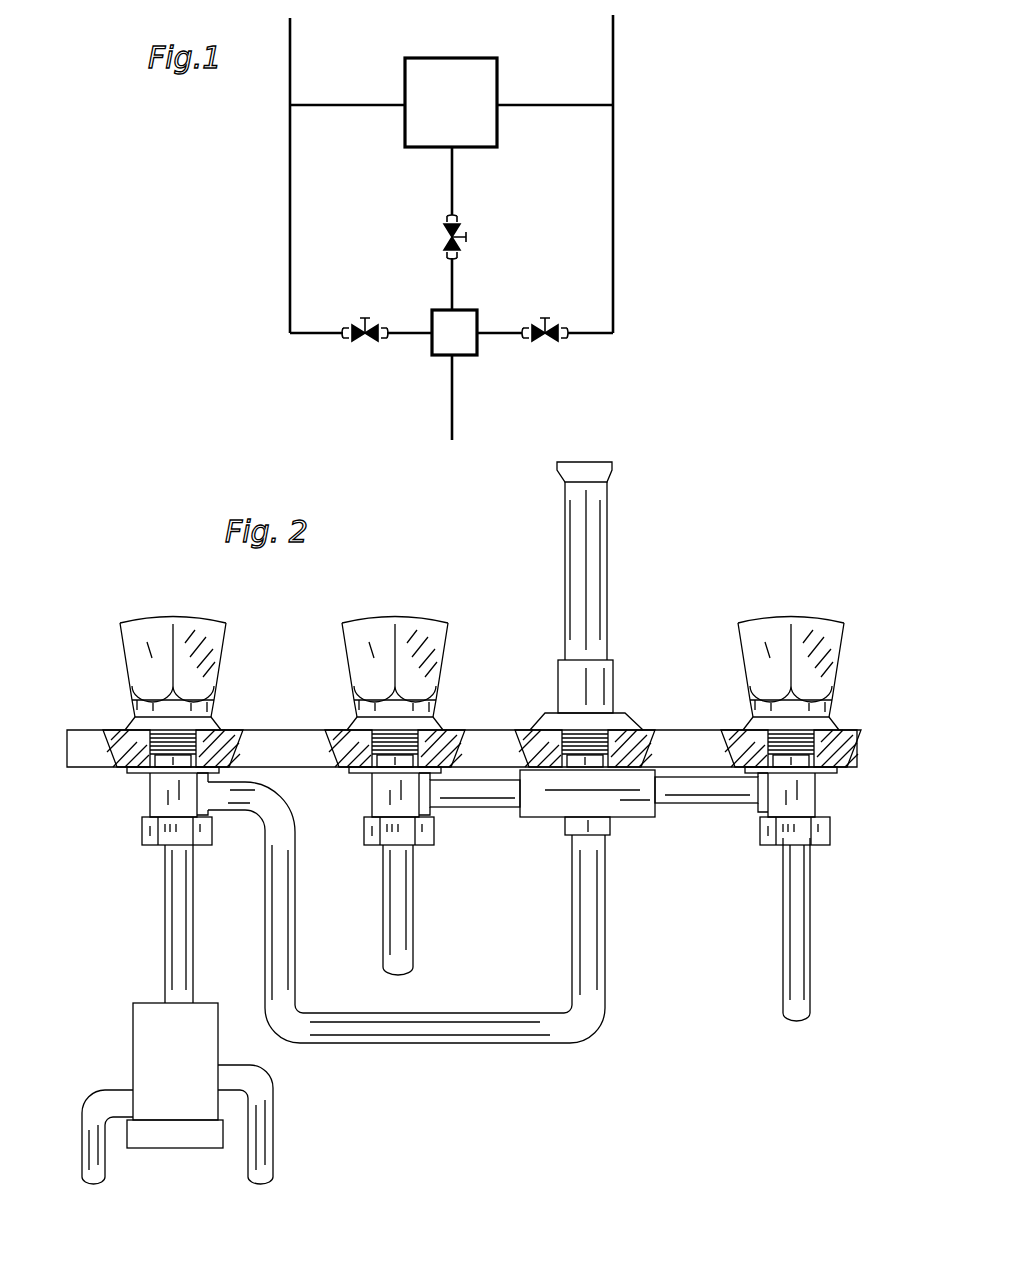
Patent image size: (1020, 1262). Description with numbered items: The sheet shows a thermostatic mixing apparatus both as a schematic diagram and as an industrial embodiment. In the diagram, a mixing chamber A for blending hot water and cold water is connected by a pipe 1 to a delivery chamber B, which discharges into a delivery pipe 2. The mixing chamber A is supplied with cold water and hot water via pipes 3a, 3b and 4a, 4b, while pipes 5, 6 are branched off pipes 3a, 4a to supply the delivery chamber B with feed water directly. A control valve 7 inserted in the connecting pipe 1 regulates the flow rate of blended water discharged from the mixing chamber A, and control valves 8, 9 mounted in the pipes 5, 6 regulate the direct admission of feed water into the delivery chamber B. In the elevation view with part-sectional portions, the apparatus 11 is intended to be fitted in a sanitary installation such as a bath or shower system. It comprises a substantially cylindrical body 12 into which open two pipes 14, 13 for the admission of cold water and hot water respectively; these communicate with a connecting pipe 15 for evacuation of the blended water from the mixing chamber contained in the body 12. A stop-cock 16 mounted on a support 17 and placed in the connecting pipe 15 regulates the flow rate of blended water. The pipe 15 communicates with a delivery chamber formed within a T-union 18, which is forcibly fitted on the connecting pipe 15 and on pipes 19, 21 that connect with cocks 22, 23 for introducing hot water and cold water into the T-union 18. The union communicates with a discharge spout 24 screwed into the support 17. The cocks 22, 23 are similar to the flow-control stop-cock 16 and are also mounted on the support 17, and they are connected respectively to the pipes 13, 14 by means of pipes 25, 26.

In FIG. 1, the pipe 1 is at (458, 181).
In FIG. 1, the delivery pipe 2 is at (458, 387).
In FIG. 1, the pipe 3a is at (290, 67).
In FIG. 1, the pipe 3b is at (330, 104).
In FIG. 1, the pipe 4a is at (615, 54).
In FIG. 1, the pipe 4b is at (553, 100).
In FIG. 1, the pipe 5 is at (290, 238).
In FIG. 1, the pipe 6 is at (615, 211).
In FIG. 1, the control valve 7 is at (466, 227).
In FIG. 1, the control valve 8 is at (375, 318).
In FIG. 1, the control valve 9 is at (552, 341).
In FIG. 1, the mixing chamber A is at (452, 72).
In FIG. 1, the delivery chamber B is at (465, 318).
In FIG. 2, the apparatus 11 is at (512, 1060).
In FIG. 2, the body 12 is at (131, 1040).
In FIG. 2, the pipe 13 is at (107, 1108).
In FIG. 2, the pipe 14 is at (268, 1136).
In FIG. 2, the connecting-pipe 15 is at (180, 956).
In FIG. 2, the stop-cock 16 is at (203, 633).
In FIG. 2, the support 17 is at (285, 738).
In FIG. 2, the T-union 18 is at (631, 806).
In FIG. 2, the pipe 19 is at (478, 808).
In FIG. 2, the pipe 21 is at (700, 800).
In FIG. 2, the cock 22 is at (420, 623).
In FIG. 2, the cock 23 is at (766, 624).
In FIG. 2, the discharge spout 24 is at (593, 548).
In FIG. 2, the pipe 25 is at (405, 920).
In FIG. 2, the pipe 26 is at (796, 952).